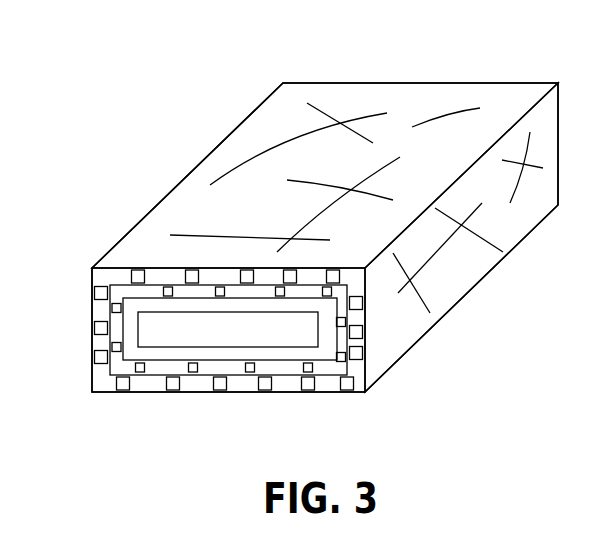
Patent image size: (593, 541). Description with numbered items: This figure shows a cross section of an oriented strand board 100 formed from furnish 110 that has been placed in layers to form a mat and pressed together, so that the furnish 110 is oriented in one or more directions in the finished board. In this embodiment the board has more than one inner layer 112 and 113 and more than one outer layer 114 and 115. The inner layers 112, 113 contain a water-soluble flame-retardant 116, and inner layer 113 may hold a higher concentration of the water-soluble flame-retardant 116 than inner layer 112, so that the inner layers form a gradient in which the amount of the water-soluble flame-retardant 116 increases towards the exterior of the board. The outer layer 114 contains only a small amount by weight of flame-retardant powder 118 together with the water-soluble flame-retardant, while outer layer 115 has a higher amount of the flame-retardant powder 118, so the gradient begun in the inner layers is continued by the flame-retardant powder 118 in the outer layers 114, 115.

The oriented strand board 100 is at (219, 86).
The furnish 110 is at (447, 117).
The inner layer 112 is at (158, 327).
The inner layer 113 is at (94, 328).
The outer layer 114 is at (157, 380).
The outer layer 115 is at (327, 385).
The water-soluble flame-retardant 116 is at (268, 312).
The flame-retardant powder 118 is at (123, 393).